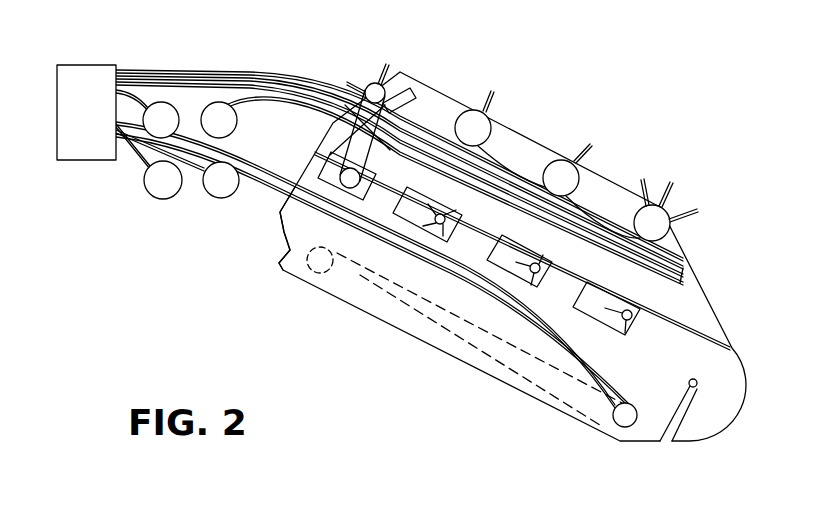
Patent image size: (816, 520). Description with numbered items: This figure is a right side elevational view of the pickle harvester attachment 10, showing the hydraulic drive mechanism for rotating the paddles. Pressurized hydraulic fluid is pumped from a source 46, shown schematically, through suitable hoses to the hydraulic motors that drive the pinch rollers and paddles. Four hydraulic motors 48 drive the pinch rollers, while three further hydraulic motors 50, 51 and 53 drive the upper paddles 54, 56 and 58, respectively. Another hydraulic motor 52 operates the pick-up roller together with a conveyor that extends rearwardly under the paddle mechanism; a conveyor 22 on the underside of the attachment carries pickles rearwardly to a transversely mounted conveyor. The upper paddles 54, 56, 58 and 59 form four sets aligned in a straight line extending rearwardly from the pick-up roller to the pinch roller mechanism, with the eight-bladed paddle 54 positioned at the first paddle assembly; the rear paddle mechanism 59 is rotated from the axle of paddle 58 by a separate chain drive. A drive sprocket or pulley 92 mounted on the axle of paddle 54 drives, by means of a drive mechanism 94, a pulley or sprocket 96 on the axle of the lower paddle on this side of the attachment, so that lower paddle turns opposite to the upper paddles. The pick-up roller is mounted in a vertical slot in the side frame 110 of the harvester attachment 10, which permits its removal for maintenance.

The pickle harvester attachment 10 is at (407, 372).
The conveyor 22 is at (512, 343).
The source 46 is at (82, 165).
The hydraulic motors 48 is at (217, 112).
The hydraulic motor 50 is at (660, 222).
The hydraulic motor 51 is at (565, 177).
The hydraulic motor 52 is at (623, 423).
The hydraulic motor 53 is at (477, 127).
The upper paddle 54 is at (672, 185).
The upper paddle 56 is at (584, 150).
The upper paddle 58 is at (488, 93).
The rear paddle mechanism 59 is at (378, 85).
The drive sprocket or pulley 92 is at (378, 92).
The drive mechanism 94 is at (348, 176).
The pulley or sprocket 96 is at (330, 165).
The side frame 110 is at (300, 233).